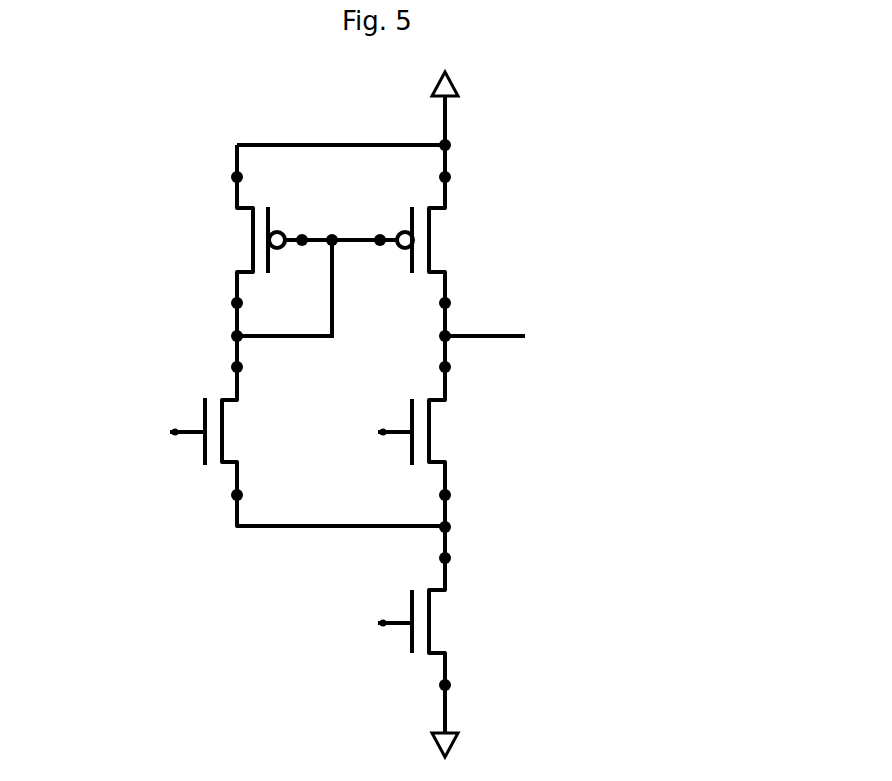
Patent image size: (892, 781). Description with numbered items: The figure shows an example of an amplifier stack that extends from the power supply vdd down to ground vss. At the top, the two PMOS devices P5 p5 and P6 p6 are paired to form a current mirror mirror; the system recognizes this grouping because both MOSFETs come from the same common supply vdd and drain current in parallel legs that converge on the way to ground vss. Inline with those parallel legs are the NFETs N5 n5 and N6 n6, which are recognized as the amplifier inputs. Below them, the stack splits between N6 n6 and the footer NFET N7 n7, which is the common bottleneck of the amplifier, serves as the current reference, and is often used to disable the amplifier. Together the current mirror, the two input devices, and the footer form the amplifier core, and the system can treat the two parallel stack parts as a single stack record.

The MOSFET P5 p5 is at (226, 234).
The MOSFET P6 p6 is at (456, 234).
The MOSFET N5 n5 is at (239, 425).
The MOSFET N6 n6 is at (447, 425).
The footer NFET N7 n7 is at (447, 614).
The power supply node vdd is at (469, 103).
The ground node vss is at (467, 727).
The current mirror is at (324, 299).